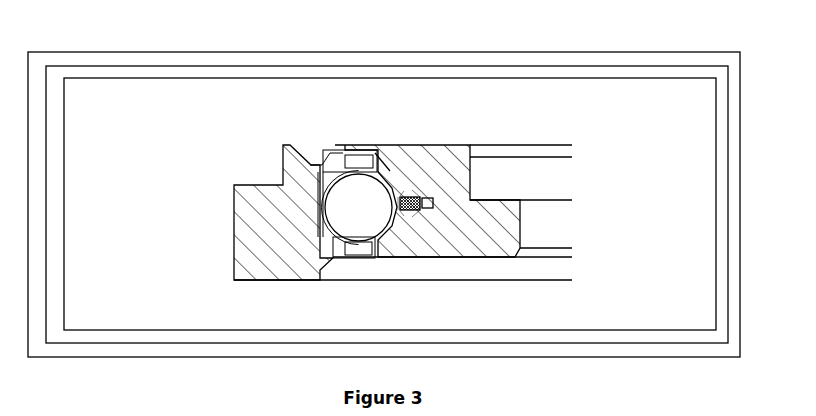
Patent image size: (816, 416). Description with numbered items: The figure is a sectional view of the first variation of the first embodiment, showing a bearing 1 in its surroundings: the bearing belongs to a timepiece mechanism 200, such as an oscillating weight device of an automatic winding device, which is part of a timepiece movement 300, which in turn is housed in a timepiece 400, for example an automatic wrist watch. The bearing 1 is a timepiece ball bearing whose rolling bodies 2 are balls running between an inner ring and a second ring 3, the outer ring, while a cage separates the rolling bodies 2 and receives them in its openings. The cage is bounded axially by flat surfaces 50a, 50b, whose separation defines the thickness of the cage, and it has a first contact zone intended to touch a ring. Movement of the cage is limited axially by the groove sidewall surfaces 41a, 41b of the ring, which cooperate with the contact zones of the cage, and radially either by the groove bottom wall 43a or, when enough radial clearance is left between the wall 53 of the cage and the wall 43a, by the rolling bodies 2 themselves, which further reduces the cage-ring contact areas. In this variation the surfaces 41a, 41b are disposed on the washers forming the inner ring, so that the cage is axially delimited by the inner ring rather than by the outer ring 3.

The bearing 1 is at (257, 150).
The rolling bodies 2 is at (353, 207).
The second ring 3 is at (270, 262).
The surface 41a is at (418, 184).
The surface 41b is at (417, 224).
The wall 43a is at (441, 207).
The flat surface 50a is at (403, 186).
The flat surface 50b is at (401, 224).
The wall 53 is at (436, 199).
The timepiece mechanism 200 is at (535, 71).
The timepiece movement 300 is at (585, 59).
The timepiece 400 is at (634, 46).